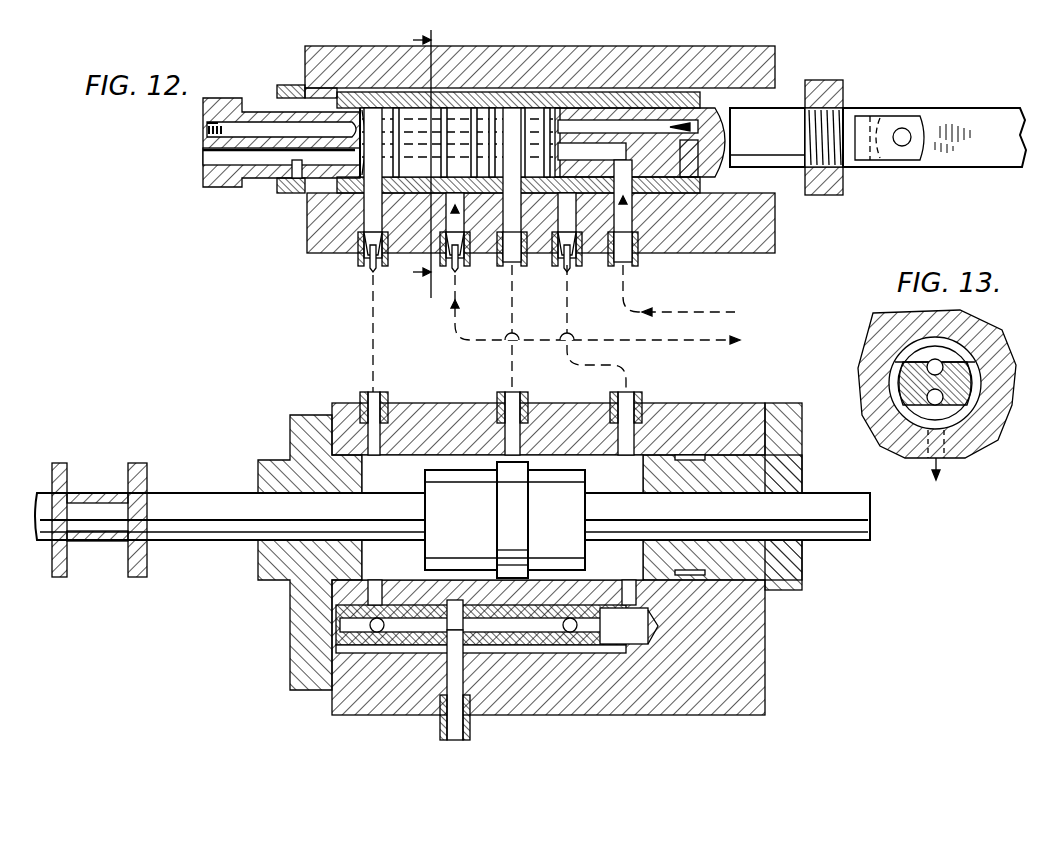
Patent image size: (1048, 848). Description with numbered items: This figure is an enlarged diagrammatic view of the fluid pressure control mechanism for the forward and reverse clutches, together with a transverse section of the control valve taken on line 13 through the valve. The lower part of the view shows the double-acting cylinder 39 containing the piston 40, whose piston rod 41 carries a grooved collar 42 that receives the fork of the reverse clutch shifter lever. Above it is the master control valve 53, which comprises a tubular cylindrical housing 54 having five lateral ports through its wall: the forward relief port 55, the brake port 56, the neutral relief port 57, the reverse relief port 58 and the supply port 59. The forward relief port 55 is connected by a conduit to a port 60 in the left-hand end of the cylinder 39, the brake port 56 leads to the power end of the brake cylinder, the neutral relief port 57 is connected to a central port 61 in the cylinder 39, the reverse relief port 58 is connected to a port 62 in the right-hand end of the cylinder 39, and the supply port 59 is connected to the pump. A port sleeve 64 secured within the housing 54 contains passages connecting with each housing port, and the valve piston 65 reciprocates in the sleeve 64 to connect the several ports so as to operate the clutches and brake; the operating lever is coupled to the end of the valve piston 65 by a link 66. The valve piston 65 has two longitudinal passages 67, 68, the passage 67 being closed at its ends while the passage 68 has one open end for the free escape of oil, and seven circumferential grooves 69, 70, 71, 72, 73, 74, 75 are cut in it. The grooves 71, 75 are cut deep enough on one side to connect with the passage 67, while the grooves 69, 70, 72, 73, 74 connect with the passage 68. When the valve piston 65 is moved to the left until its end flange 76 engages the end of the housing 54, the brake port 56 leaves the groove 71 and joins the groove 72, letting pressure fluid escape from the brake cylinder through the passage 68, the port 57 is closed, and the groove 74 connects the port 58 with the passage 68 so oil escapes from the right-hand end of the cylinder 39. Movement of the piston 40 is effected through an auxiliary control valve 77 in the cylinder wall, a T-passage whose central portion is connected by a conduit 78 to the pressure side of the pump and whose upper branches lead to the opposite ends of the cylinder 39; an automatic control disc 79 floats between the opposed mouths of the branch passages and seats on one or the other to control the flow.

In FIG. 12, the section line 13— 13 is at (428, 158).
In FIG. 12, the double-acting cylinder 39 is at (426, 404).
In FIG. 12, the piston 40 is at (522, 472).
In FIG. 12, the piston rod 41 is at (204, 493).
In FIG. 12, the grooved collar 42 is at (136, 461).
In FIG. 12, the master control valve 53 is at (307, 246).
In FIG. 12, the tubular cylindrical housing 54 is at (718, 250).
In FIG. 13, the tubular cylindrical housing 54 is at (880, 334).
In FIG. 12, the forward relief port 55 is at (364, 256).
In FIG. 12, the brake port 56 is at (465, 240).
In FIG. 13, the brake port 56 is at (948, 452).
In FIG. 12, the neutral relief port 57 is at (522, 242).
In FIG. 12, the reverse relief port 58 is at (578, 242).
In FIG. 12, the supply port 59 is at (636, 236).
In FIG. 12, the port 60 is at (366, 400).
In FIG. 12, the central port 61 is at (500, 400).
In FIG. 12, the port 62 is at (640, 402).
In FIG. 12, the port sleeve 64 is at (290, 200).
In FIG. 13, the port sleeve 64 is at (898, 378).
In FIG. 12, the valve piston 65 is at (790, 185).
In FIG. 13, the valve piston 65 is at (915, 398).
In FIG. 12, the link 66 is at (988, 108).
In FIG. 12, the longitudinal passage 67 is at (275, 118).
In FIG. 13, the longitudinal passage 67 is at (945, 364).
In FIG. 12, the longitudinal passage 68 is at (216, 158).
In FIG. 13, the longitudinal passage 68 is at (943, 398).
In FIG. 12, the circumferential groove 69 is at (290, 188).
In FIG. 12, the circumferential groove 70 is at (396, 112).
In FIG. 12, the circumferential groove 71 is at (444, 120).
In FIG. 12, the circumferential groove 72 is at (490, 110).
In FIG. 12, the circumferential groove 73 is at (540, 110).
In FIG. 12, the circumferential groove 74 is at (615, 108).
In FIG. 12, the circumferential groove 75 is at (703, 110).
In FIG. 12, the end flange 76 is at (823, 80).
In FIG. 12, the auxiliary control valve 77 is at (470, 640).
In FIG. 12, the conduit 78 is at (442, 732).
In FIG. 12, the automatic control disc 79 is at (452, 582).